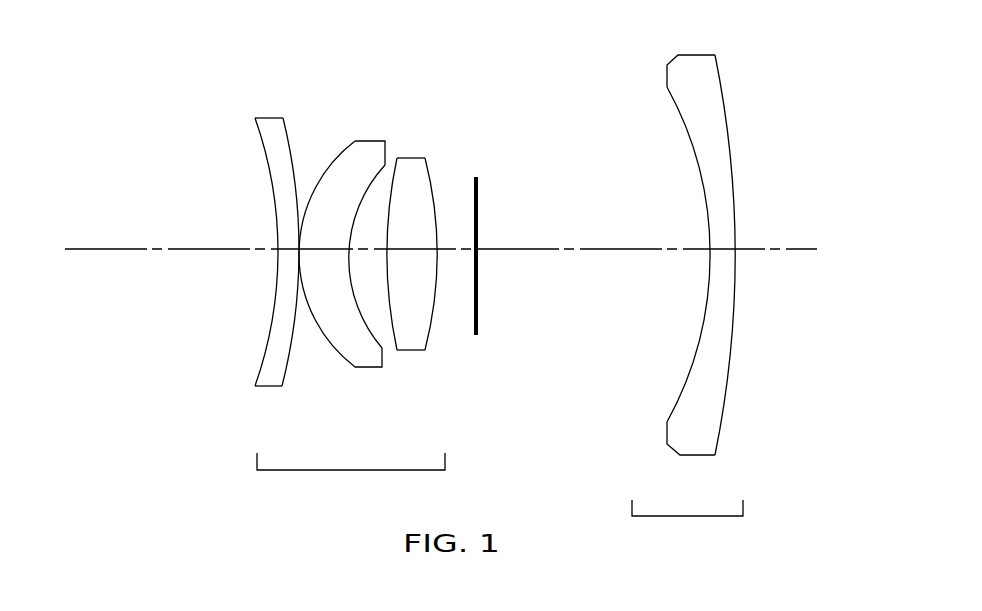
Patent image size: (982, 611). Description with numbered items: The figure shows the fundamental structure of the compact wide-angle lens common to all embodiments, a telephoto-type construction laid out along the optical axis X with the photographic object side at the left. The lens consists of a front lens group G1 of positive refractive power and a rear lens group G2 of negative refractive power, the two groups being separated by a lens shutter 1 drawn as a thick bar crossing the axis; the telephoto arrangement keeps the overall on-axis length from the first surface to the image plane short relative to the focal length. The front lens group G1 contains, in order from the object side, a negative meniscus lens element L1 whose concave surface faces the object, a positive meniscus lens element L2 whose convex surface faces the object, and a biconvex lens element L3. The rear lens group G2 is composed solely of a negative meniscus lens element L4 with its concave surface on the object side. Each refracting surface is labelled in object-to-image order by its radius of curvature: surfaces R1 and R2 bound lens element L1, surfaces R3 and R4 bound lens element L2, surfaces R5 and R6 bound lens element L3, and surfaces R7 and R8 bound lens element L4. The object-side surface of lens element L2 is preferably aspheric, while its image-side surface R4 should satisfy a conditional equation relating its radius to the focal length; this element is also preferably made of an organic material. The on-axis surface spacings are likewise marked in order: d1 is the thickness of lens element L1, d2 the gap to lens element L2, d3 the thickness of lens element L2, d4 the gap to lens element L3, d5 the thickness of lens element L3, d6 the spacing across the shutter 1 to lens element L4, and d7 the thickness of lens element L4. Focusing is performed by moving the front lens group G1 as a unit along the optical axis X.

The optical axis X is at (158, 243).
The lens shutter 1 is at (478, 193).
The front lens group G1 is at (335, 285).
The rear lens group G2 is at (698, 275).
The negative meniscus lens element L1 is at (247, 250).
The positive meniscus lens element L2 is at (356, 258).
The biconvex lens element L3 is at (442, 257).
The negative meniscus lens element L4 is at (698, 227).
The lens element surface radius of curvature R1 is at (262, 353).
The lens element surface radius of curvature R2 is at (288, 372).
The lens element surface radius of curvature R3 is at (333, 353).
The lens element surface radius of curvature R4 is at (382, 298).
The lens element surface radius of curvature R5 is at (395, 328).
The lens element surface radius of curvature R6 is at (433, 328).
The lens element surface radius of curvature R7 is at (680, 389).
The lens element surface radius of curvature R8 is at (727, 393).
The on-axis surface spacing d1 is at (277, 240).
The on-axis surface spacing d2 is at (297, 242).
The on-axis surface spacing d3 is at (310, 245).
The on-axis surface spacing d4 is at (377, 247).
The on-axis surface spacing d5 is at (393, 245).
The on-axis surface spacing d6 is at (594, 245).
The on-axis surface spacing d7 is at (722, 245).